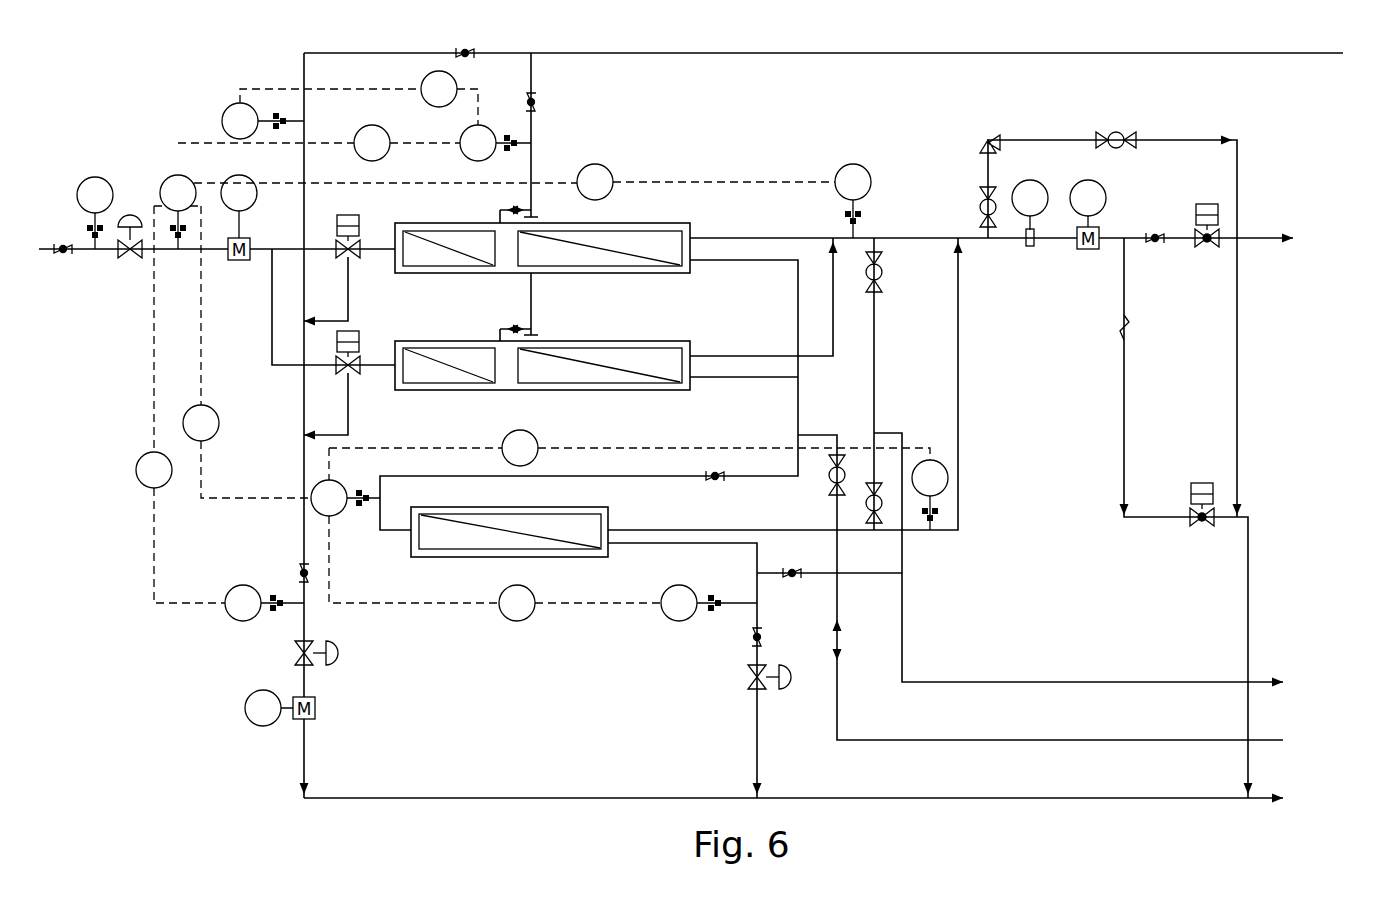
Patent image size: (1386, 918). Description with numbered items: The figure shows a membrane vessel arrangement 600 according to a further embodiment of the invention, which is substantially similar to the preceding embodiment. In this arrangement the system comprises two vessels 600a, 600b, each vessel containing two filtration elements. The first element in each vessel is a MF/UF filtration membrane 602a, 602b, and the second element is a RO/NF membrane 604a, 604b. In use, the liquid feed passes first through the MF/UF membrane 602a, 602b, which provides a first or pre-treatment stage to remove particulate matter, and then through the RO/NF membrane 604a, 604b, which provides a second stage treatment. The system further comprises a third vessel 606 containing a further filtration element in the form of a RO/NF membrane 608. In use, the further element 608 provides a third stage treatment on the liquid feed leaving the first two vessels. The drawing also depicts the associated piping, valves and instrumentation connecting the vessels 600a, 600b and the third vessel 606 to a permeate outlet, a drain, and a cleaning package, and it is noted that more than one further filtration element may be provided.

The membrane vessel arrangement 600 is at (696, 419).
The vessel 600a is at (546, 229).
The vessel 600b is at (584, 374).
The MF/UF filtration membrane 602a is at (450, 258).
The MF/UF filtration membrane 602b is at (452, 368).
The RO/NF membrane 604a is at (635, 258).
The RO/NF membrane 604b is at (648, 375).
The third vessel 606 is at (501, 572).
The RO/NF membrane 608 is at (578, 528).